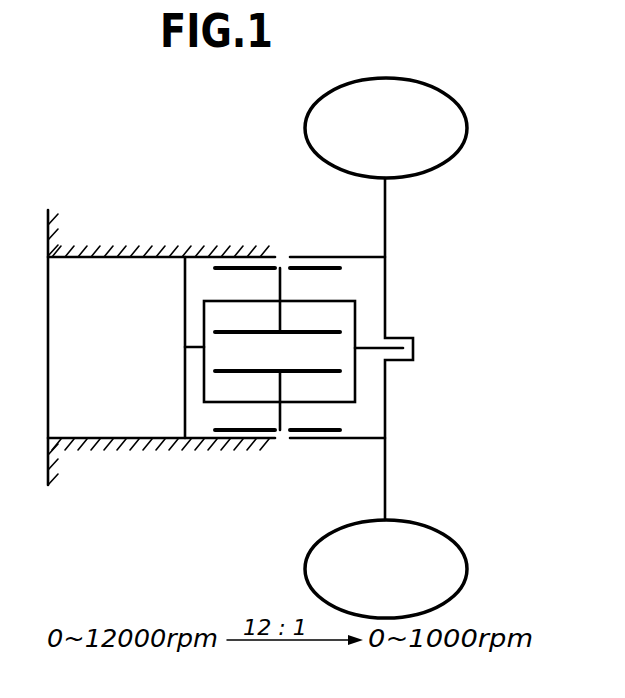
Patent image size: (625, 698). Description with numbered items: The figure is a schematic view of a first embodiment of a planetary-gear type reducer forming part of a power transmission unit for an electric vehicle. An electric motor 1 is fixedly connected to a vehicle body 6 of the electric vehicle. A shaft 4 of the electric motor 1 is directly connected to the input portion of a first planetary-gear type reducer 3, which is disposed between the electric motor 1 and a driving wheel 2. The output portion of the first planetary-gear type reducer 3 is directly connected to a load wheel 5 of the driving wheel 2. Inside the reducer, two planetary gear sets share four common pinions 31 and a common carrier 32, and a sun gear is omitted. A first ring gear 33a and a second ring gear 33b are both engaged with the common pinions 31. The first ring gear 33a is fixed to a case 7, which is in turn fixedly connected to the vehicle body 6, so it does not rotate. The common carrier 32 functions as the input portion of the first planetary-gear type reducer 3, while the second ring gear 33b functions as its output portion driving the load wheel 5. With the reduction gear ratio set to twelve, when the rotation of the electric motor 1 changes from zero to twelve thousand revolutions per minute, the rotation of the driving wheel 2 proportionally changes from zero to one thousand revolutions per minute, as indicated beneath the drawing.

The electric motor 1 is at (141, 330).
The driving wheel 2 is at (470, 128).
The first planetary-gear type reducer 3 is at (245, 338).
The common pinions 31 is at (283, 267).
The common carrier 32 is at (355, 378).
The first ring gear 33a is at (228, 260).
The second ring gear 33b is at (338, 256).
The shaft 4 is at (186, 350).
The load wheel 5 is at (386, 270).
The vehicle body 6 is at (48, 352).
The case 7 is at (131, 446).